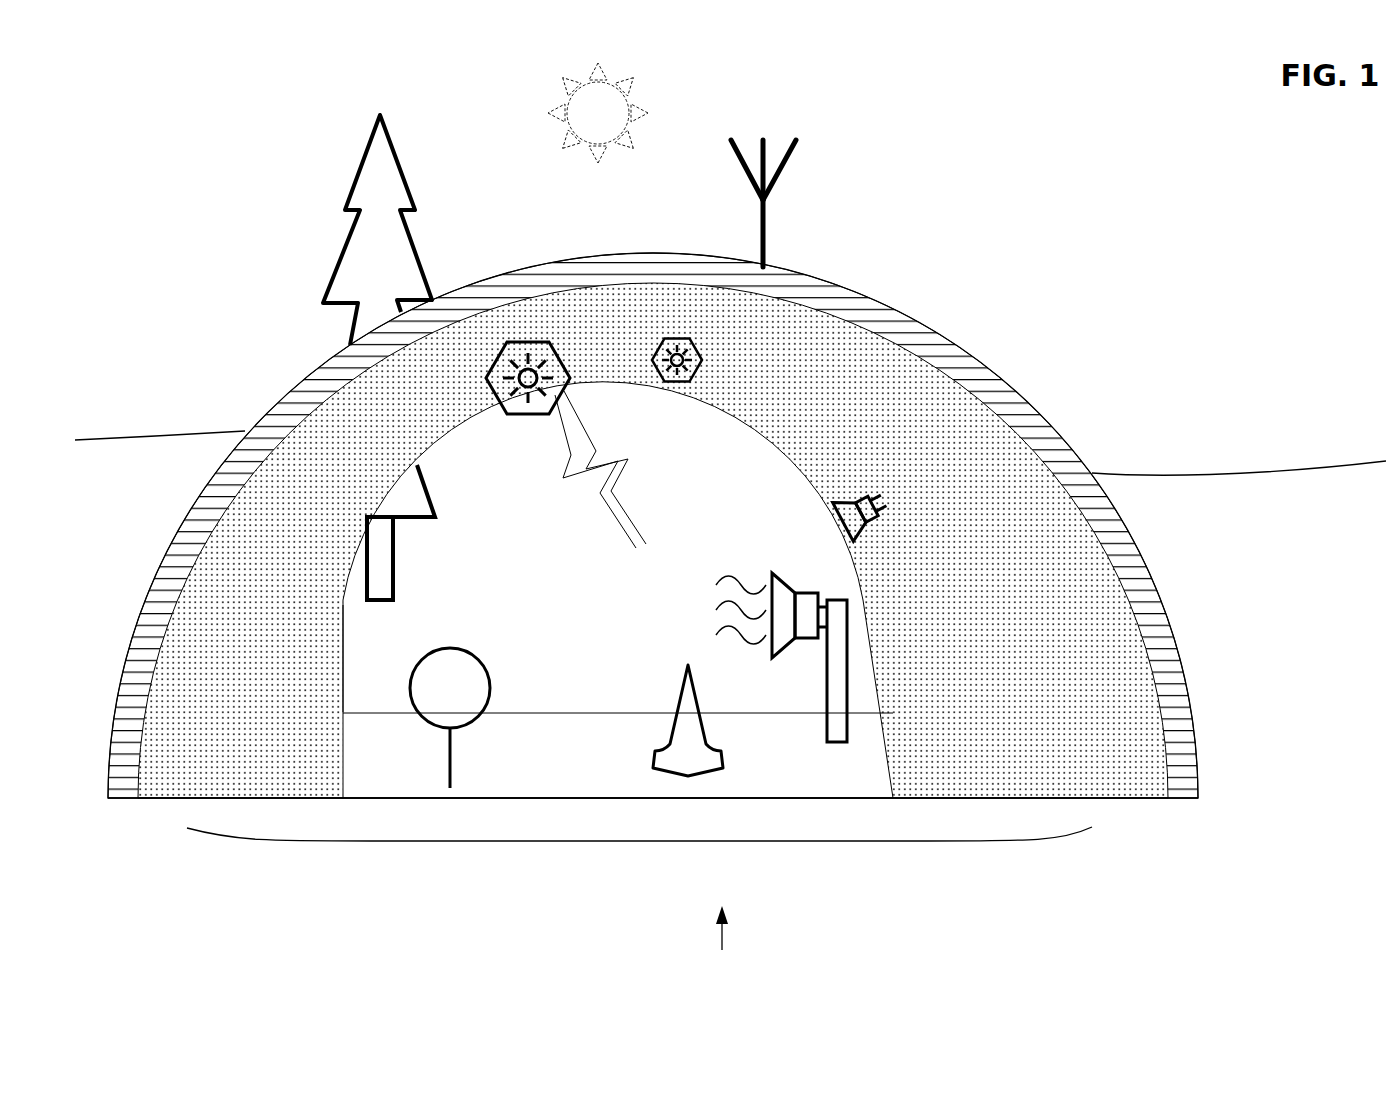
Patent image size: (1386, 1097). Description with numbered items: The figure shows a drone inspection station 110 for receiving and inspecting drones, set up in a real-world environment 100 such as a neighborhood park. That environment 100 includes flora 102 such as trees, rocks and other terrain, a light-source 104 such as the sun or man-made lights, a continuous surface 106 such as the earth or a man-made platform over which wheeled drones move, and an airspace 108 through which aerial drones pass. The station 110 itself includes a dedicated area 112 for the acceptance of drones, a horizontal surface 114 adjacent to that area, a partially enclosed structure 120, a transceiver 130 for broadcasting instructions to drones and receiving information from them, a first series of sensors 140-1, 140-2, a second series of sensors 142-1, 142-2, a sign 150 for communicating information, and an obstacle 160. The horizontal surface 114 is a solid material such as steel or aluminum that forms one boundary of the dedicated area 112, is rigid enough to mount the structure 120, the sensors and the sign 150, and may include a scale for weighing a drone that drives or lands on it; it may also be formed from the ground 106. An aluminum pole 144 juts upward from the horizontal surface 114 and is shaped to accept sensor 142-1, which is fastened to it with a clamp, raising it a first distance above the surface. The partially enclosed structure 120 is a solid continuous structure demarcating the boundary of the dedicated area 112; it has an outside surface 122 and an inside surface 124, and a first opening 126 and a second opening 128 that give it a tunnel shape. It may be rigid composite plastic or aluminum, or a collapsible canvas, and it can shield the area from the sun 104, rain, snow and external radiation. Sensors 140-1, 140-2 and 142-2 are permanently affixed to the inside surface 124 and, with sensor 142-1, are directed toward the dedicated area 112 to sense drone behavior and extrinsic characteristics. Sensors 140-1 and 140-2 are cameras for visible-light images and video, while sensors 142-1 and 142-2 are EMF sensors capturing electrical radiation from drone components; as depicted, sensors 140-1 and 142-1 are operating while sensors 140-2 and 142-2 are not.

The real-world environment 100 is at (165, 108).
The flora 102 is at (377, 230).
The light-source 104 is at (598, 113).
The continuous surface 106 is at (700, 875).
The airspace 108 is at (730, 311).
The drone inspection station 110 is at (727, 943).
The dedicated area 112 is at (601, 567).
The horizontal surface 114 is at (618, 735).
The partially enclosed structure 120 is at (1224, 710).
The outside surface 122 is at (997, 411).
The inside surface 124 is at (653, 540).
The first opening 126 is at (653, 839).
The second opening 128 is at (355, 609).
The transceiver 130 is at (802, 197).
The sensor 140-1 is at (515, 417).
The sensor 140-2 is at (667, 385).
The sensor 142-1 is at (786, 598).
The sensor 142-2 is at (832, 503).
The aluminum pole 144 is at (835, 653).
The sign 150 is at (450, 718).
The obstacle 160 is at (688, 720).